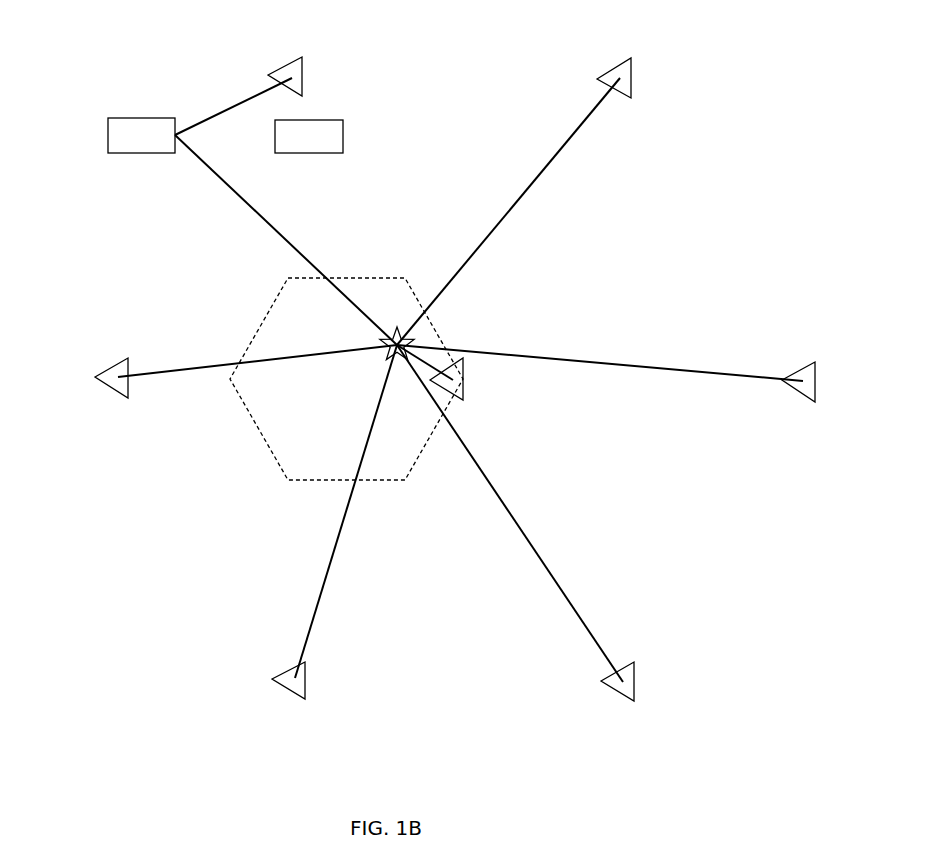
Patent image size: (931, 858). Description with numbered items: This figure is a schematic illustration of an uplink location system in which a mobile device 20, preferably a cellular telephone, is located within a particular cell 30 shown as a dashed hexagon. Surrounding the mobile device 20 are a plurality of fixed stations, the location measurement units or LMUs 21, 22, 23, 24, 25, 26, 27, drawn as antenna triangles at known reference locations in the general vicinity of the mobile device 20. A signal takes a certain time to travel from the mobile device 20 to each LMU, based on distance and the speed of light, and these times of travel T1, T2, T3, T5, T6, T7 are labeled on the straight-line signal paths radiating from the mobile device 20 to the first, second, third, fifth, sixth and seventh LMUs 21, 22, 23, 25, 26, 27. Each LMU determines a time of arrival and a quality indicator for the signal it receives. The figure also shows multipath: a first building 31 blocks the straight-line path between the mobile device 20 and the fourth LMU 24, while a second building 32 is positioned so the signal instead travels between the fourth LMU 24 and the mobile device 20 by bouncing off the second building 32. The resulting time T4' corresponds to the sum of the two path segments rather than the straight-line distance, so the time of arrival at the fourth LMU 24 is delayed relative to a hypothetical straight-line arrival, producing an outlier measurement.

The mobile device 20 is at (379, 338).
The first LMU 21 is at (466, 402).
The second LMU 22 is at (819, 361).
The third LMU 23 is at (633, 57).
The fourth LMU 24 is at (304, 57).
The fifth LMU 25 is at (95, 376).
The sixth LMU 26 is at (272, 678).
The seventh LMU 27 is at (638, 660).
The cell 30 is at (287, 277).
The first building 31 is at (345, 133).
The second building 32 is at (107, 130).
The time of travel T1 is at (436, 360).
The time of travel T2 is at (614, 358).
The time of travel T3 is at (571, 131).
The multipath time of travel T4' is at (254, 240).
The time of travel T5 is at (195, 366).
The time of travel T6 is at (319, 590).
The time of travel T7 is at (526, 534).